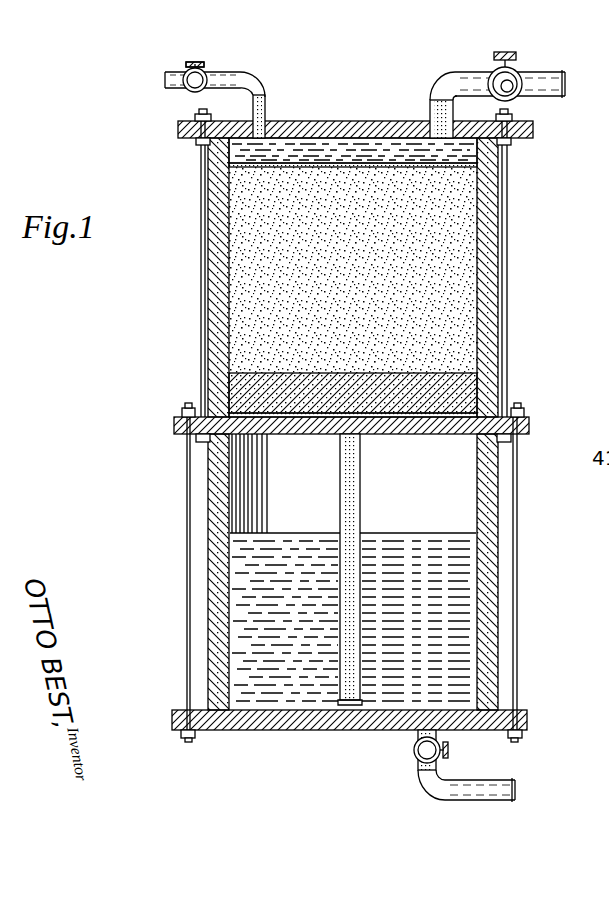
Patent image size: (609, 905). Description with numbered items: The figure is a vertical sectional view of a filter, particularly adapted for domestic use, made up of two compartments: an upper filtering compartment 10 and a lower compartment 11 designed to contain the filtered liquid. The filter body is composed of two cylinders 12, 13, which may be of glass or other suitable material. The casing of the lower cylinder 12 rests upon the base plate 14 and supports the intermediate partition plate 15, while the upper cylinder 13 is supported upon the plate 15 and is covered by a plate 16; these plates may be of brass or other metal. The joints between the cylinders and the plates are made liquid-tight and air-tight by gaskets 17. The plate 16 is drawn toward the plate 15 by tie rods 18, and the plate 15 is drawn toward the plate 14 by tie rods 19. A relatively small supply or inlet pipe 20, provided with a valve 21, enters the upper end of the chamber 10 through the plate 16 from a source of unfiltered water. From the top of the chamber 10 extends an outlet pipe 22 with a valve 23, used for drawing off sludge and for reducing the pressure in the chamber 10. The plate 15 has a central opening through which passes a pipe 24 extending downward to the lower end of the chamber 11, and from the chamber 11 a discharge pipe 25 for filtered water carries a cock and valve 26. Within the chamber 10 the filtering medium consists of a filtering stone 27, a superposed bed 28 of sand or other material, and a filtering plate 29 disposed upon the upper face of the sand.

The filtering compartment 10 is at (322, 153).
The filtered liquid compartment 11 is at (352, 483).
The lower cylinder 12 is at (488, 568).
The upper cylinder 13 is at (490, 281).
The base plate 14 is at (352, 730).
The intermediate partition plate 15 is at (544, 420).
The cover plate 16 is at (348, 123).
The gaskets 17 is at (210, 140).
The upper tie rods 18 is at (203, 308).
The lower tie rods 19 is at (187, 558).
The supply or inlet pipe 20 is at (266, 104).
The inlet valve 21 is at (190, 90).
The outlet pipe 22 is at (558, 75).
The outlet valve 23 is at (513, 73).
The central pipe 24 is at (366, 503).
The discharge pipe 25 is at (487, 782).
The cock and valve 26 is at (414, 757).
The filtering stone 27 is at (460, 394).
The sand bed 28 is at (247, 247).
The filtering plate 29 is at (285, 166).